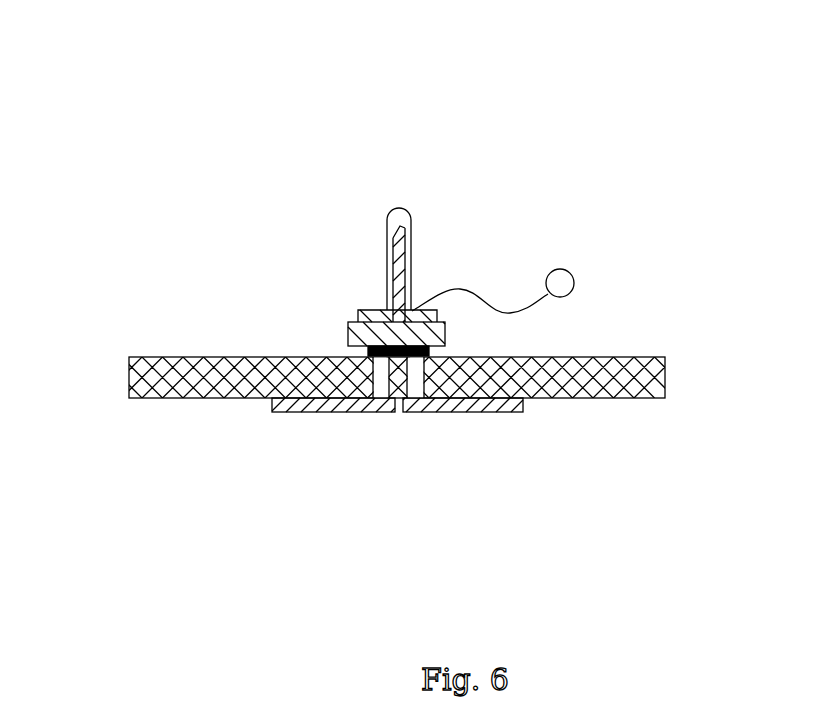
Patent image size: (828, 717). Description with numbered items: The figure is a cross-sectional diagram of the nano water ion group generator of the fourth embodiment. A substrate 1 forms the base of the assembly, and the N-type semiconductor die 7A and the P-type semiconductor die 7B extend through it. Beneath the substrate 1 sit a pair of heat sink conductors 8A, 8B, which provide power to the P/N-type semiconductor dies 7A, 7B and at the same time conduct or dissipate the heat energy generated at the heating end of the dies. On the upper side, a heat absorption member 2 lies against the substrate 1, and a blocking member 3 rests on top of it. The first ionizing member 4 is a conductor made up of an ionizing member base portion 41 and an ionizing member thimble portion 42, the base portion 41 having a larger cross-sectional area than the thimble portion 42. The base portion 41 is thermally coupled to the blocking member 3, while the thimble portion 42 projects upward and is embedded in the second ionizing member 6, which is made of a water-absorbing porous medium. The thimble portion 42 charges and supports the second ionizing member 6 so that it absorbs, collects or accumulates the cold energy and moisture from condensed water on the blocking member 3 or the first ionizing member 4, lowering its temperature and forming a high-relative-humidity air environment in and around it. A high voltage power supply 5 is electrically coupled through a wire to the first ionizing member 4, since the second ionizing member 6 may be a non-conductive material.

The substrate 1 is at (235, 399).
The heat absorption member 2 is at (367, 350).
The blocking member 3 is at (357, 322).
The first ionizing member 4 is at (239, 177).
The ionizing member base portion 41 is at (378, 310).
The ionizing member thimble portion 42 is at (393, 237).
The high voltage power supply 5 is at (553, 292).
The second ionizing member 6 is at (412, 215).
The N-type semiconductor die 7A is at (381, 383).
The P-type semiconductor die 7B is at (417, 383).
The heat sink conductor 8A is at (378, 399).
The heat sink conductor 8B is at (410, 399).